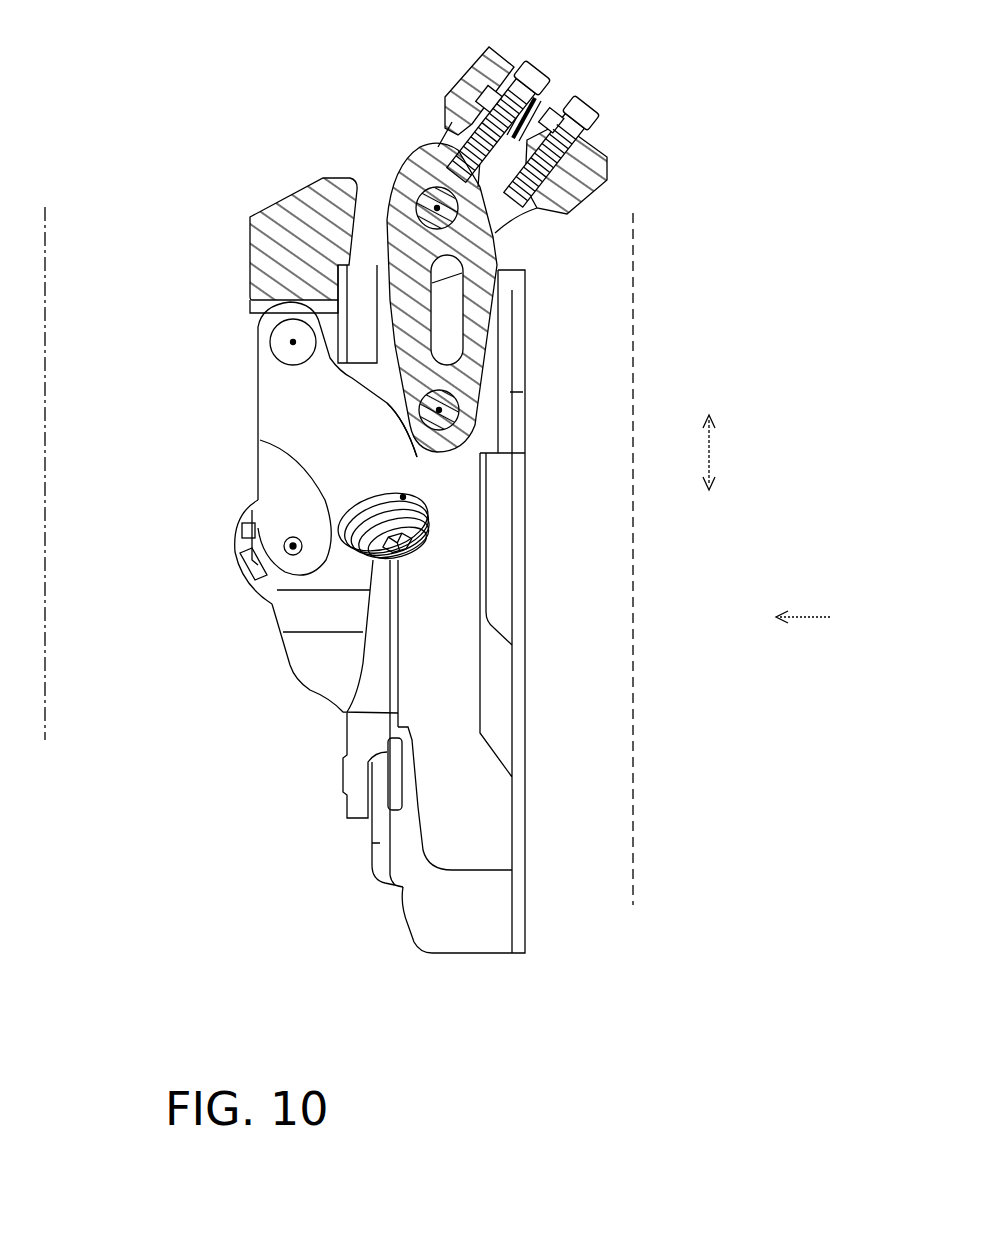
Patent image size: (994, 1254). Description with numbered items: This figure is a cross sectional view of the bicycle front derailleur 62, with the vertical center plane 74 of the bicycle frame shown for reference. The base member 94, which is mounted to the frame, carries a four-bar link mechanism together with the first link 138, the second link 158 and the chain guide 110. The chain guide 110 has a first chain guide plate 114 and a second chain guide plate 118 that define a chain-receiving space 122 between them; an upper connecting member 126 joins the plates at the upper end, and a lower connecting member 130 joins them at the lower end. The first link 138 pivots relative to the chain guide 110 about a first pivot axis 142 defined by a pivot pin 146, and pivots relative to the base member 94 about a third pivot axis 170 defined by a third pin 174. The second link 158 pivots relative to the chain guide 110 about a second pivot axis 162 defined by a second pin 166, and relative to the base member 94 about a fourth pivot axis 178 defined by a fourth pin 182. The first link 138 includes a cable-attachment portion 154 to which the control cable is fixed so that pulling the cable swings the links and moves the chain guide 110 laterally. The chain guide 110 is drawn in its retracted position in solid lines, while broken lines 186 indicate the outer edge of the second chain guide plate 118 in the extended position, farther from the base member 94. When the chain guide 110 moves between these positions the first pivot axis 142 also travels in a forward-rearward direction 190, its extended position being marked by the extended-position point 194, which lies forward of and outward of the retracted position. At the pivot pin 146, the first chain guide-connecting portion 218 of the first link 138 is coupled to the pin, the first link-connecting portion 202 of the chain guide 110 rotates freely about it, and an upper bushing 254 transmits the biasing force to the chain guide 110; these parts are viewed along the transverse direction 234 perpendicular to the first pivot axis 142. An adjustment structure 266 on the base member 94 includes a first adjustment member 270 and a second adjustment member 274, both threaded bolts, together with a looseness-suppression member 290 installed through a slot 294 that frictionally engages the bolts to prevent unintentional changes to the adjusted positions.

The bicycle front derailleur 62 is at (168, 110).
The vertical center plane 74 is at (48, 245).
The base member 94 is at (270, 198).
The chain guide 110 is at (522, 910).
The first chain guide plate 114 is at (318, 673).
The second chain guide plate 118 is at (520, 648).
The chain-receiving space 122 is at (463, 682).
The upper connecting member 126 is at (493, 403).
The lower connecting member 130 is at (440, 935).
The first link 138 is at (280, 407).
The first pivot axis 142 is at (300, 550).
The pivot pin 146 is at (293, 550).
The cable-attachment portion 154 is at (403, 465).
The second link 158 is at (487, 347).
The second pivot axis 162 is at (455, 412).
The second pin 166 is at (480, 438).
The third pivot axis 170 is at (295, 347).
The third pin 174 is at (273, 340).
The fourth pivot axis 178 is at (410, 183).
The fourth pin 182 is at (443, 220).
The broken lines 186 is at (635, 797).
The forward-rearward direction 190 is at (713, 457).
The extended-position point 194 is at (403, 495).
The first link-connecting portion 202 is at (278, 583).
The first chain guide-connecting portion 218 is at (275, 513).
The transverse direction 234 is at (817, 615).
The upper bushing 254 is at (248, 545).
The adjustment structure 266 is at (647, 157).
The first adjustment member 270 is at (597, 115).
The second adjustment member 274 is at (533, 73).
The looseness-suppression member 290 is at (537, 105).
The slot 294 is at (475, 110).